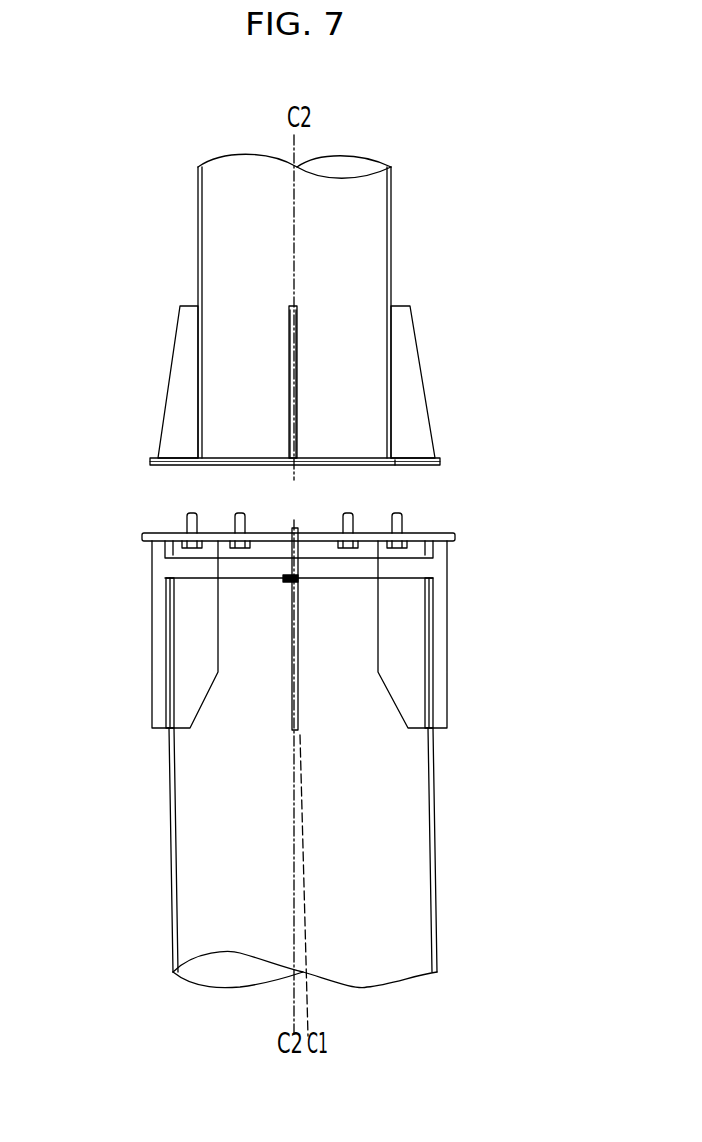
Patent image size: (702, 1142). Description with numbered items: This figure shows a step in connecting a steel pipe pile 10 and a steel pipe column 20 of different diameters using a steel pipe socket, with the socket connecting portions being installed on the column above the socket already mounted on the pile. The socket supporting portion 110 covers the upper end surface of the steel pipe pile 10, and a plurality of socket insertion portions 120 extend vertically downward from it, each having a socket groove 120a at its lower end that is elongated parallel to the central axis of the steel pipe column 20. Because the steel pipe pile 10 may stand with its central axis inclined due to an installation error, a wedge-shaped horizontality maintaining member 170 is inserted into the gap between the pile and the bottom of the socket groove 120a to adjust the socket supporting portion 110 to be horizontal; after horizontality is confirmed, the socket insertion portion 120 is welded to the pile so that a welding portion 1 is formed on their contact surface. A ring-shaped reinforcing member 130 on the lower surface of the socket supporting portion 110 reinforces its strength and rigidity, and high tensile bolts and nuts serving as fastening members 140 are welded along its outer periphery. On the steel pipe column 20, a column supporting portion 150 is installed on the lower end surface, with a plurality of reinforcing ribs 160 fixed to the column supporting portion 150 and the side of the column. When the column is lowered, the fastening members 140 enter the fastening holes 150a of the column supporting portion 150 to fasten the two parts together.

The welding portion 1 is at (434, 622).
The steel pipe pile 10 is at (437, 822).
The steel pipe column 20 is at (392, 222).
The socket supporting portion 110 is at (456, 537).
The socket insertion portion 120 is at (448, 660).
The socket groove 120a is at (165, 698).
The reinforcing member 130 is at (430, 548).
The fastening member 140 is at (186, 524).
The column supporting portion 150 is at (147, 462).
The fastening hole 150a is at (395, 466).
The reinforcing rib 160 is at (173, 347).
The horizontality maintaining member 170 is at (165, 582).